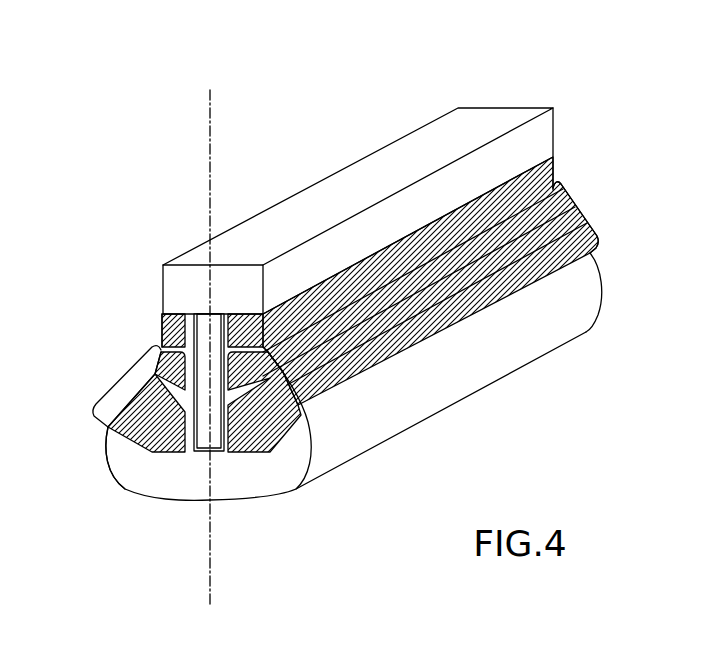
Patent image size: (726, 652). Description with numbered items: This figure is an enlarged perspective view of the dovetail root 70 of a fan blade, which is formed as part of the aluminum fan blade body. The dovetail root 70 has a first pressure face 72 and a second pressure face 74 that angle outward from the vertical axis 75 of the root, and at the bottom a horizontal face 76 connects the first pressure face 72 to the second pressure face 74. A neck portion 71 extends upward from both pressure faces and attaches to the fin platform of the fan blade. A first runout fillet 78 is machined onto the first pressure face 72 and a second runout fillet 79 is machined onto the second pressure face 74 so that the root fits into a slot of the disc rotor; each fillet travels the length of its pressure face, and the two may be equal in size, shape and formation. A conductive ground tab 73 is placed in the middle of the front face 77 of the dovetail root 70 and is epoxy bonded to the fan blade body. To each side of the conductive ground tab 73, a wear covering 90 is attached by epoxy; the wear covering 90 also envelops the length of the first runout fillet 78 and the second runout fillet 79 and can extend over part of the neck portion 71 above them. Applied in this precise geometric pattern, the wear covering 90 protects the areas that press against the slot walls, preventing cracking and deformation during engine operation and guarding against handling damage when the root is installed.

The dovetail root 70 is at (548, 48).
The neck portion 71 is at (535, 141).
The first pressure face 72 is at (608, 268).
The conductive ground tab 73 is at (210, 335).
The second pressure face 74 is at (100, 430).
The vertical axis 75 is at (210, 138).
The horizontal face 76 is at (243, 507).
The front face 77 is at (182, 465).
The first runout fillet 78 is at (580, 208).
The second runout fillet 79 is at (128, 378).
The wear covering 90 is at (378, 370).